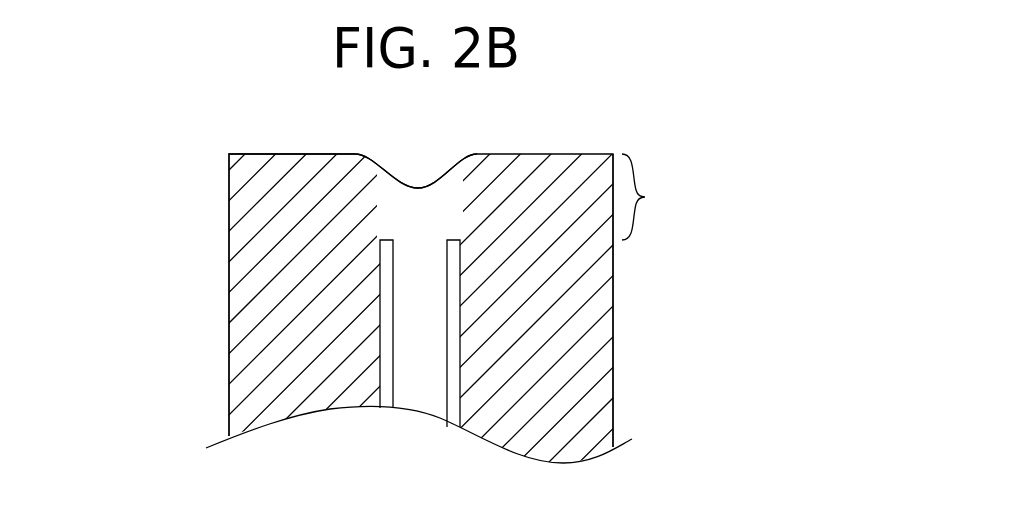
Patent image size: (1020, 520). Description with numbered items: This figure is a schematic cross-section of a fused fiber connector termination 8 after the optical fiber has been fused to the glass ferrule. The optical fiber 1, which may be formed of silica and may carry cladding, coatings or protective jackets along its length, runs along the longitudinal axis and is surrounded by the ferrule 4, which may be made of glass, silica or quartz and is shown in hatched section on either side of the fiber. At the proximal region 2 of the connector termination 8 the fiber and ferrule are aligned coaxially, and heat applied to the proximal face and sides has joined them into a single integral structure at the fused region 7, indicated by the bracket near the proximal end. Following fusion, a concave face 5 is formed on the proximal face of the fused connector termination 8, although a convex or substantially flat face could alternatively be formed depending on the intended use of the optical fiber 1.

The optical fiber 1 is at (423, 333).
The proximal region 2 is at (200, 188).
The ferrule 4 is at (250, 350).
The concave face 5 is at (419, 168).
The fused region 7 is at (644, 197).
The connector termination 8 is at (700, 148).